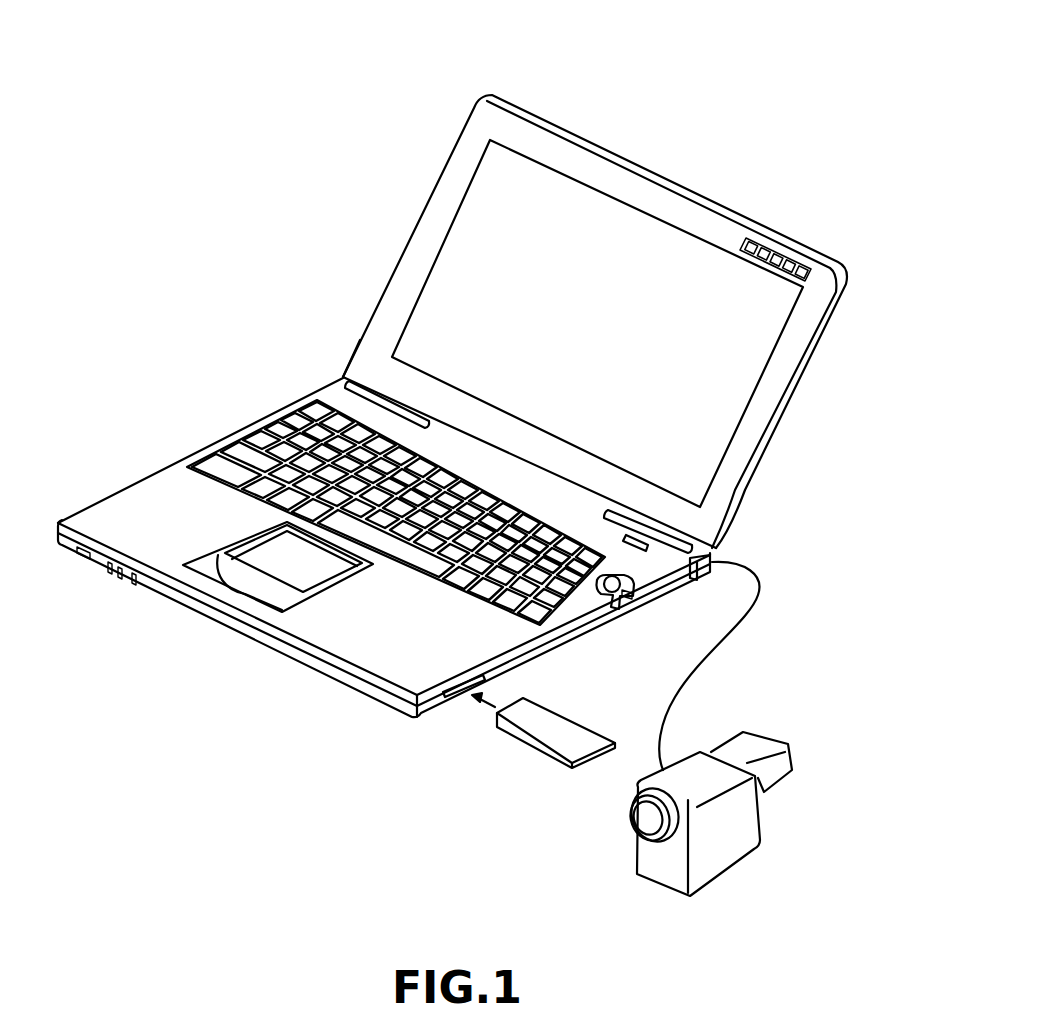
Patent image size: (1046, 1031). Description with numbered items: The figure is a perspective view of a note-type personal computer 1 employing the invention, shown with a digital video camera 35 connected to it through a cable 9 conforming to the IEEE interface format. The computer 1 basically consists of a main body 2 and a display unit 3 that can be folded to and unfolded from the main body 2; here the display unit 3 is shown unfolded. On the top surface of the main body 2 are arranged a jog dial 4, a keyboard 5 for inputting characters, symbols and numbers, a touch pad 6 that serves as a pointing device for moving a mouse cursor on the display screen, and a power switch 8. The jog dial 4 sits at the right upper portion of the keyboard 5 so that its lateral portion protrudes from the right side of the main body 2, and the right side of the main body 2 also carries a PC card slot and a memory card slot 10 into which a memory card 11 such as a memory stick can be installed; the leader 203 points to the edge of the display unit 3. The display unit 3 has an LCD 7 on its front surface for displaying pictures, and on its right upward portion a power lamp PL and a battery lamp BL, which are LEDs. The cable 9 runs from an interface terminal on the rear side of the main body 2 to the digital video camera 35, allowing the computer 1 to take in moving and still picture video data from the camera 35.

The note-type personal computer 1 is at (668, 138).
The main body 2 is at (585, 642).
The display unit 3 is at (418, 217).
The display housing 203 is at (368, 335).
The jog dial 4 is at (629, 594).
The keyboard 5 is at (250, 436).
The touch pad 6 is at (262, 557).
The LCD 7 is at (452, 290).
The power switch 8 is at (654, 549).
The IEEE 1394 cable 9 is at (760, 594).
The card slot 10 is at (455, 698).
The memory card 11 is at (548, 737).
The digital video camera 35 is at (728, 862).
The battery lamp BL is at (792, 258).
The power lamp PL is at (810, 270).